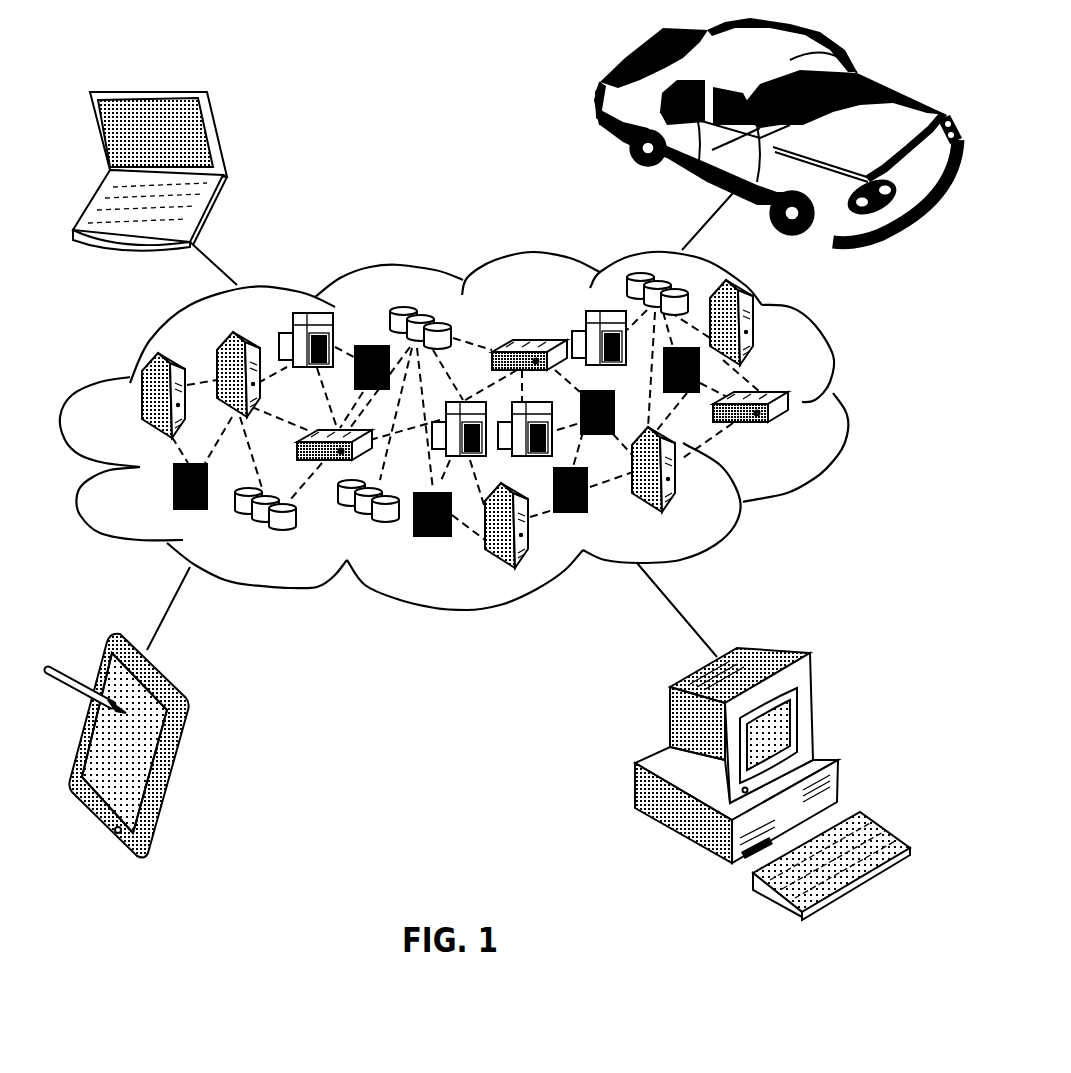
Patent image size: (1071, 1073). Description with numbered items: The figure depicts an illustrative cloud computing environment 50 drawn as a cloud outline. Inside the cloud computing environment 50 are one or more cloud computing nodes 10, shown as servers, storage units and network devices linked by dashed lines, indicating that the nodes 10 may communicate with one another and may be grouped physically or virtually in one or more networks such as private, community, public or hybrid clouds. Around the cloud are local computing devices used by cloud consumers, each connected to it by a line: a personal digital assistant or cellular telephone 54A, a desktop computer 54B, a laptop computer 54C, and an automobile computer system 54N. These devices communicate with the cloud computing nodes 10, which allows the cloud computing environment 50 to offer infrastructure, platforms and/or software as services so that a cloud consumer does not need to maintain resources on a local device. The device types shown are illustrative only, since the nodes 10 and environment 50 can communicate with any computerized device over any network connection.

The cloud computing nodes 10 is at (803, 438).
The cloud computing environment 50 is at (853, 403).
The personal digital assistant (PDA) or cellular telephone 54A is at (180, 733).
The desktop computer 54B is at (775, 652).
The laptop computer 54C is at (218, 138).
The automobile computer system 54N is at (598, 102).